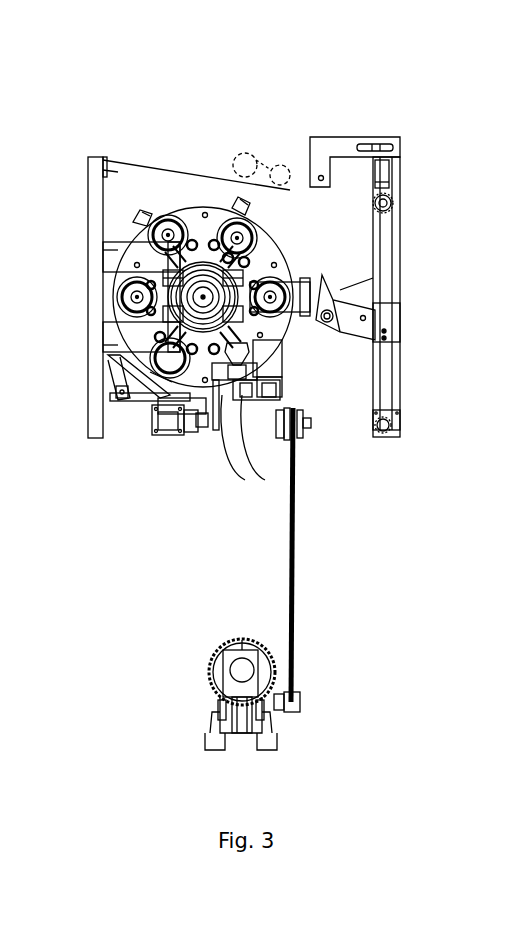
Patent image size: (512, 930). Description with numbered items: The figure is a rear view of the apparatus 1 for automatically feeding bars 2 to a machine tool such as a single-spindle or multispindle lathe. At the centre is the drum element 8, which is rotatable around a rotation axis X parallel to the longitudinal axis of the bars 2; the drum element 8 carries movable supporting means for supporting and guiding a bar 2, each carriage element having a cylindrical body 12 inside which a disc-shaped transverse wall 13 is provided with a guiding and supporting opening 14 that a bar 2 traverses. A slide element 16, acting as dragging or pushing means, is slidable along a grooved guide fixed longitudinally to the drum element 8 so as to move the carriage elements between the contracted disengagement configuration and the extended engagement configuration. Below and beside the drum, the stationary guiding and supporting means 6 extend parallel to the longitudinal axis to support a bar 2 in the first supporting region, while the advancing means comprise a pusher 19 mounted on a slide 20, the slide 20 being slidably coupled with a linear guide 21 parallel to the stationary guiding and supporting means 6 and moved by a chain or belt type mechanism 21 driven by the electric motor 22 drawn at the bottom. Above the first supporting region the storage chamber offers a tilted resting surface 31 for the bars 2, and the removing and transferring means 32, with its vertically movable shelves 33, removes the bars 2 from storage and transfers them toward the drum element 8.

The apparatus 1 is at (376, 89).
The bar 2 is at (281, 168).
The stationary guiding and supporting means 6 is at (230, 400).
The drum element 8 is at (213, 222).
The cylindrical body 12 is at (280, 289).
The transverse wall 13 is at (282, 360).
The guiding and supporting opening 14 is at (252, 212).
The slide element 16 is at (166, 224).
The pusher 19 is at (240, 420).
The slide 20 is at (292, 385).
The linear guide 21 is at (267, 420).
The electric motor 22 is at (240, 672).
The tilted resting surface 31 is at (175, 170).
The removing and transferring means 32 is at (398, 243).
The vertically movable shelves 33 is at (350, 313).
The rotation axis X is at (203, 297).